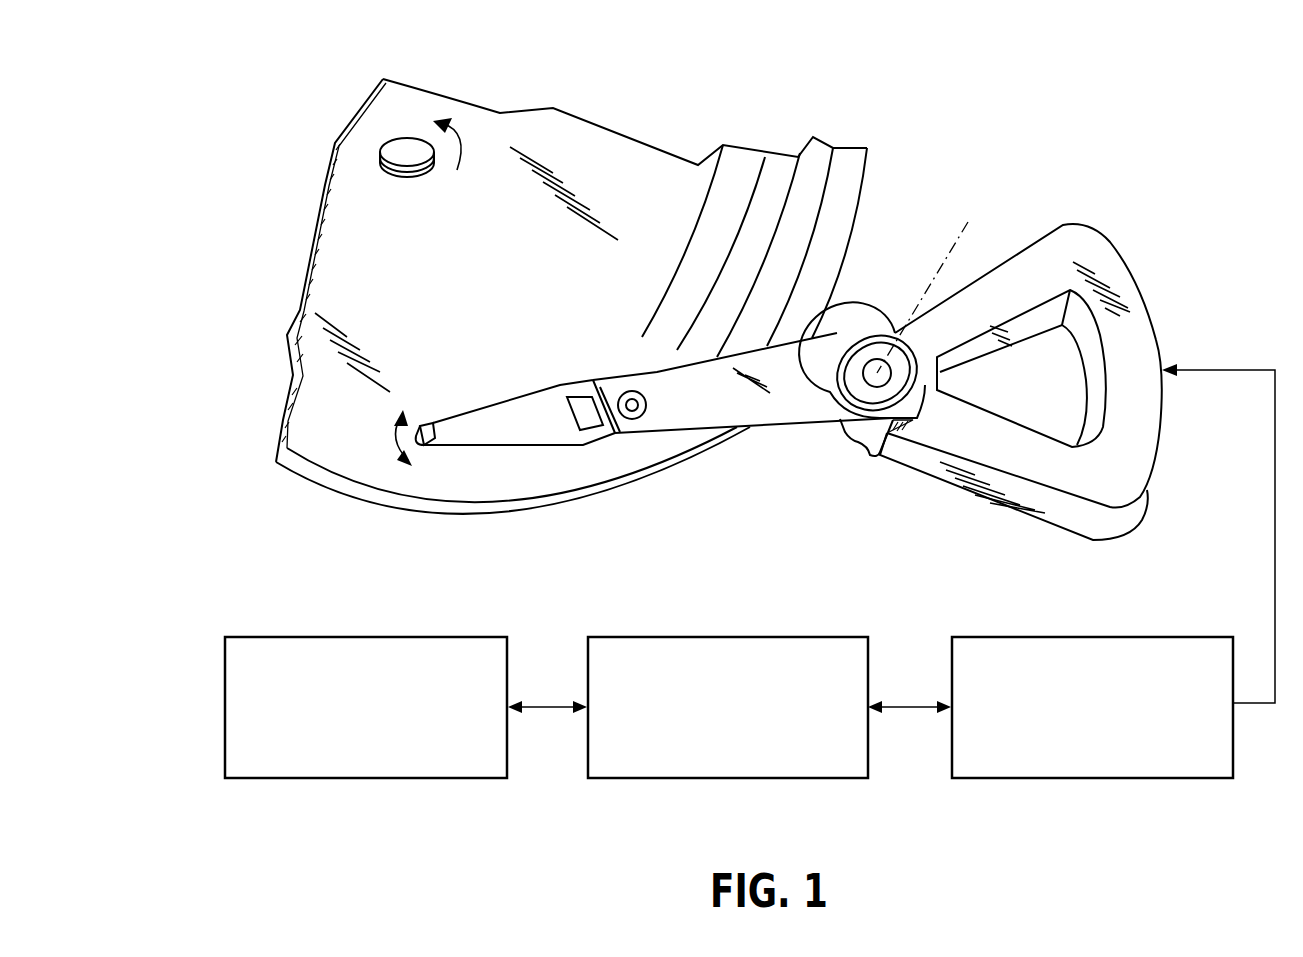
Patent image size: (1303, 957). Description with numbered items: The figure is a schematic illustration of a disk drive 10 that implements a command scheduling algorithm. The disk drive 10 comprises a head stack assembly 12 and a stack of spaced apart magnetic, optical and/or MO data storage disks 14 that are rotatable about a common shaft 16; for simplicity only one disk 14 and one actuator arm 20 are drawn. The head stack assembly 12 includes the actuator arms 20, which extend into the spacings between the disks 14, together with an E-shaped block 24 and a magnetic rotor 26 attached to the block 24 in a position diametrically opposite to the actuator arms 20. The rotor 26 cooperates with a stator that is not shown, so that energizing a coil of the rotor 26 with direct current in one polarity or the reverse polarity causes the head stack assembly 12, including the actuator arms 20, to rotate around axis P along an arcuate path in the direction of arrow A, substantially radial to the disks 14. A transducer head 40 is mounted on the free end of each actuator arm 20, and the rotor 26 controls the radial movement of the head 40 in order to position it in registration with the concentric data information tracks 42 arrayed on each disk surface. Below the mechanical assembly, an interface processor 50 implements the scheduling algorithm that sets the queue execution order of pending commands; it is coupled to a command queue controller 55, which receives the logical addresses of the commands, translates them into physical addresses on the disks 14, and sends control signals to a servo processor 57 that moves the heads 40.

The disk drive 10 is at (960, 76).
The head stack assembly 12 is at (766, 500).
The data storage disk 14 is at (655, 175).
The common shaft 16 is at (392, 145).
The actuator arm 20 is at (787, 410).
The E-shaped block 24 is at (862, 443).
The magnetic rotor 26 is at (1065, 517).
The transducer head 40 is at (422, 444).
The data information track 42 is at (832, 160).
The interface processor 50 is at (345, 653).
The command queue controller 55 is at (708, 652).
The servo processor 57 is at (1025, 652).